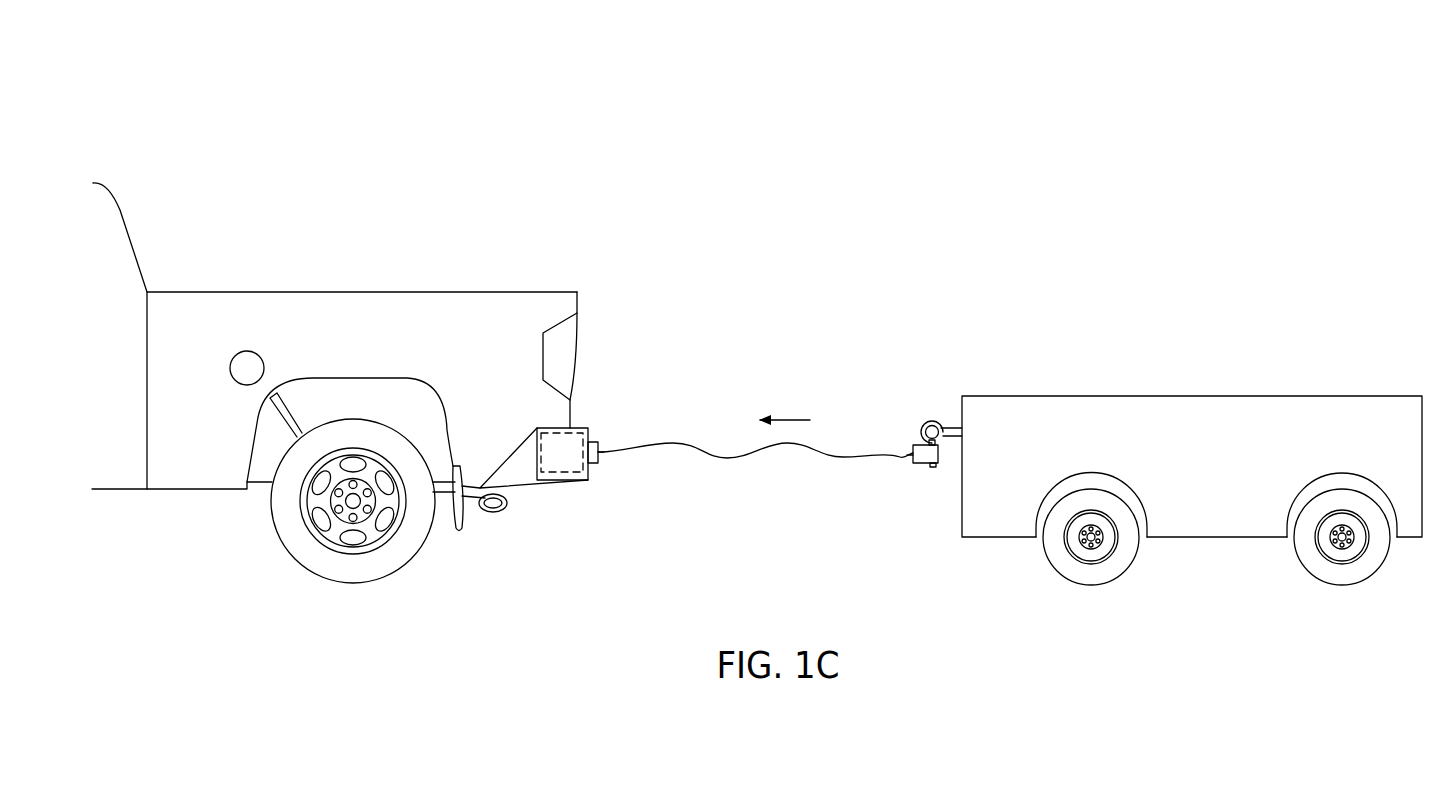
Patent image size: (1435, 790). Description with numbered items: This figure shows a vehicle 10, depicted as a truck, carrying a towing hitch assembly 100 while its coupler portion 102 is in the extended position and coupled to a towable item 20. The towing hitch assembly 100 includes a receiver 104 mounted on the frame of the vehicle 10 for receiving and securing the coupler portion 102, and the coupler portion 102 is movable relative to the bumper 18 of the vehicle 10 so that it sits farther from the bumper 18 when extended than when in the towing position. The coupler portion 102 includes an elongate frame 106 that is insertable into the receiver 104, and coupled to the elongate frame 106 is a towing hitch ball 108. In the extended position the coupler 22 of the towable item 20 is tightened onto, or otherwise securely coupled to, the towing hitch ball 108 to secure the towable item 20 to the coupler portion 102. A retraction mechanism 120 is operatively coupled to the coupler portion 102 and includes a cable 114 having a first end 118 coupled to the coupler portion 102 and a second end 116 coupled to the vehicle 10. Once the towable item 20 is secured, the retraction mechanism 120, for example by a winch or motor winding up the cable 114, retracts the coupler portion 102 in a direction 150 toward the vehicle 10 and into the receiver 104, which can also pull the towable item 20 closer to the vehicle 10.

The vehicle 10 is at (92, 163).
The bumper 18 is at (590, 478).
The towable item 20 is at (1164, 440).
The coupler 22 is at (932, 418).
The towing hitch assembly 100 is at (783, 414).
The coupler portion 102 is at (945, 418).
The receiver 104 is at (592, 443).
The elongate frame 106 is at (918, 465).
The towing hitch ball 108 is at (948, 442).
The cable 114 is at (697, 460).
The second end 116 is at (600, 460).
The first end 118 is at (912, 448).
The retraction mechanism 120 is at (535, 425).
The direction 150 is at (787, 420).